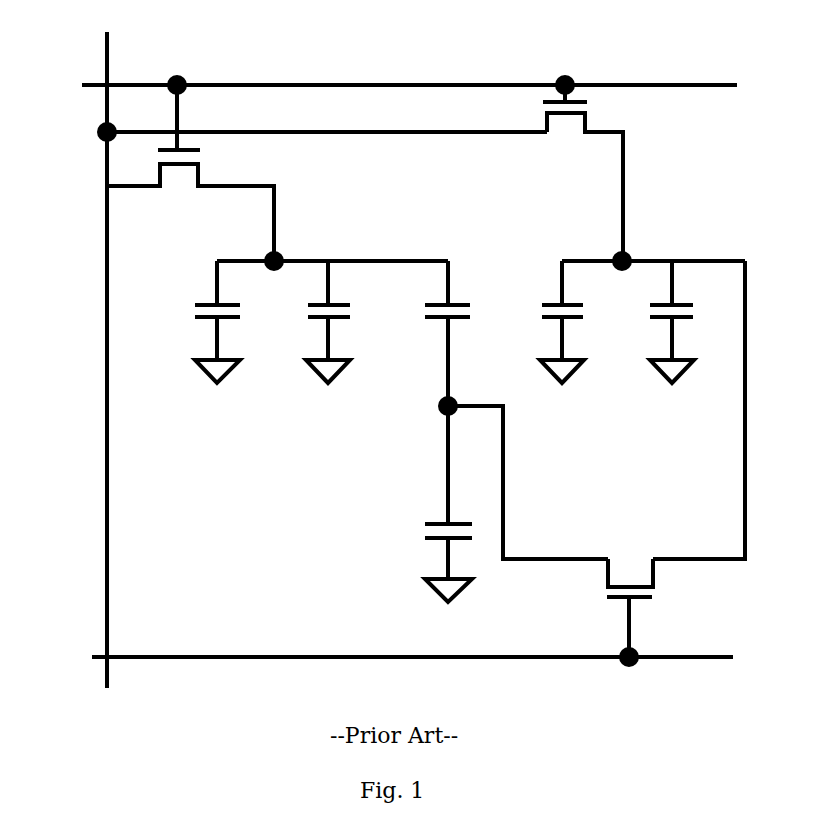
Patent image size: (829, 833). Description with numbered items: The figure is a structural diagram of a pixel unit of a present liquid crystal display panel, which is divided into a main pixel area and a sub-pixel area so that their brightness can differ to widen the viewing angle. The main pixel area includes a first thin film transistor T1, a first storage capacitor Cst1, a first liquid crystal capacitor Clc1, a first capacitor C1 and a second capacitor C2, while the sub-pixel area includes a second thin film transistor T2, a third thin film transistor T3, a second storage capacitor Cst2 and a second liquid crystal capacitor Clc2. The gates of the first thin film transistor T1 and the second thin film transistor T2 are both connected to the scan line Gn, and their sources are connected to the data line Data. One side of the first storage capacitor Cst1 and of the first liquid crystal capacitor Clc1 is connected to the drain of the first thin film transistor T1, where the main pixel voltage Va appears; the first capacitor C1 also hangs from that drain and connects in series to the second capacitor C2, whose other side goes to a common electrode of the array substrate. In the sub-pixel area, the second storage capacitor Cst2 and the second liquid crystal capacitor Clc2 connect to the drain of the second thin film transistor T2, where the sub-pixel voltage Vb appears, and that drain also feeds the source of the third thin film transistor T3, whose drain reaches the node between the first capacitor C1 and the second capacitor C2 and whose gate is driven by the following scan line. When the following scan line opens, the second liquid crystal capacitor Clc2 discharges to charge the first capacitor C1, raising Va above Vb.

The data line Data is at (108, 344).
The scan line Gn is at (390, 89).
The first thin film transistor T1 is at (190, 173).
The second thin film transistor T2 is at (583, 173).
The third thin film transistor T3 is at (630, 607).
The voltage of main pixel region Va is at (332, 253).
The voltage of sub-pixel region Vb is at (653, 252).
The first storage capacitor Cst1 is at (199, 322).
The first liquid crystal capacitor Clc1 is at (308, 322).
The second storage capacitor Cst2 is at (539, 322).
The second liquid crystal capacitor Clc2 is at (651, 322).
The first capacitor C1 is at (434, 337).
The second capacitor C2 is at (434, 504).